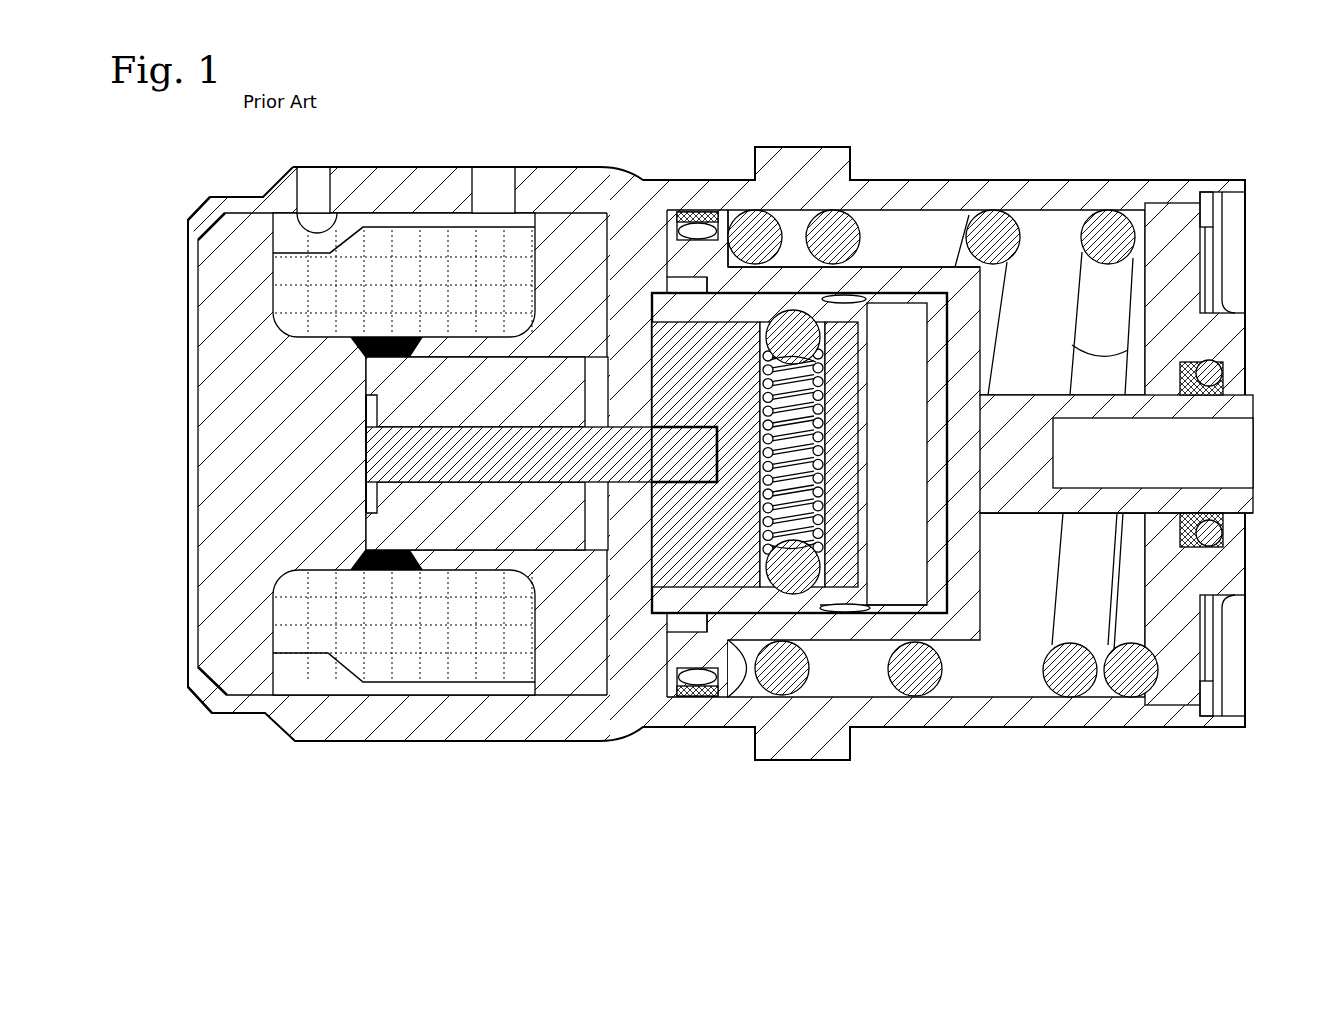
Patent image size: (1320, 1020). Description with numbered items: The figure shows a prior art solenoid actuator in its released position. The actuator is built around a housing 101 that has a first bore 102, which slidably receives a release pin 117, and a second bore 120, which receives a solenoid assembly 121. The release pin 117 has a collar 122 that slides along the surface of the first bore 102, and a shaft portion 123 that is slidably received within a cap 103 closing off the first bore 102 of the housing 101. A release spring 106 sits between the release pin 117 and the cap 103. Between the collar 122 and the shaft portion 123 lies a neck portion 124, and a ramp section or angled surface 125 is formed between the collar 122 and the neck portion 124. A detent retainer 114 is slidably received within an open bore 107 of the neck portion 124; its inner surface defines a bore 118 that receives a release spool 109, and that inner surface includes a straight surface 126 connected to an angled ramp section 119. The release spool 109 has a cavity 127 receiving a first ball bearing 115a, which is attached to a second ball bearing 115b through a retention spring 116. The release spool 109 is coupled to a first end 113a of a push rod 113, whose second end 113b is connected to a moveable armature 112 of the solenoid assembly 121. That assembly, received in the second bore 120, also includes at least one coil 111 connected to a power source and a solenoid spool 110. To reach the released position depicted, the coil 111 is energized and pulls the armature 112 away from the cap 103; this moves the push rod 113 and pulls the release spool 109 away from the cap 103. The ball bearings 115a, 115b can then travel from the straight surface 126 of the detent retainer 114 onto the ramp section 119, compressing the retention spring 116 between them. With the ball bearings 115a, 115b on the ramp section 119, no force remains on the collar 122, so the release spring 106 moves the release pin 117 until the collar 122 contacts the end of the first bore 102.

The housing 101 is at (386, 167).
The first bore 102 is at (1057, 240).
The cap 103 is at (1222, 568).
The release spring 106 is at (1020, 507).
The open bore 107 is at (902, 310).
The release spool 109 is at (676, 532).
The solenoid spool 110 is at (570, 678).
The coil 111 is at (401, 629).
The moveable armature 112 is at (473, 407).
The push rod 113 is at (526, 472).
The first end 113a is at (697, 458).
The second end 113b is at (365, 458).
The detent retainer 114 is at (937, 600).
The first ball bearing 115a is at (790, 325).
The second ball bearing 115b is at (780, 592).
The retention spring 116 is at (830, 443).
The release pin 117 is at (1067, 673).
The bore 118 is at (898, 600).
The angled ramp section 119 is at (817, 592).
The second bore 120 is at (303, 222).
The solenoid assembly 121 is at (198, 720).
The collar 122 is at (667, 283).
The shaft portion 123 is at (1228, 405).
The neck portion 124 is at (878, 267).
The ramp section 125 is at (707, 287).
The straight surface 126 is at (812, 335).
The cavity 127 is at (828, 309).